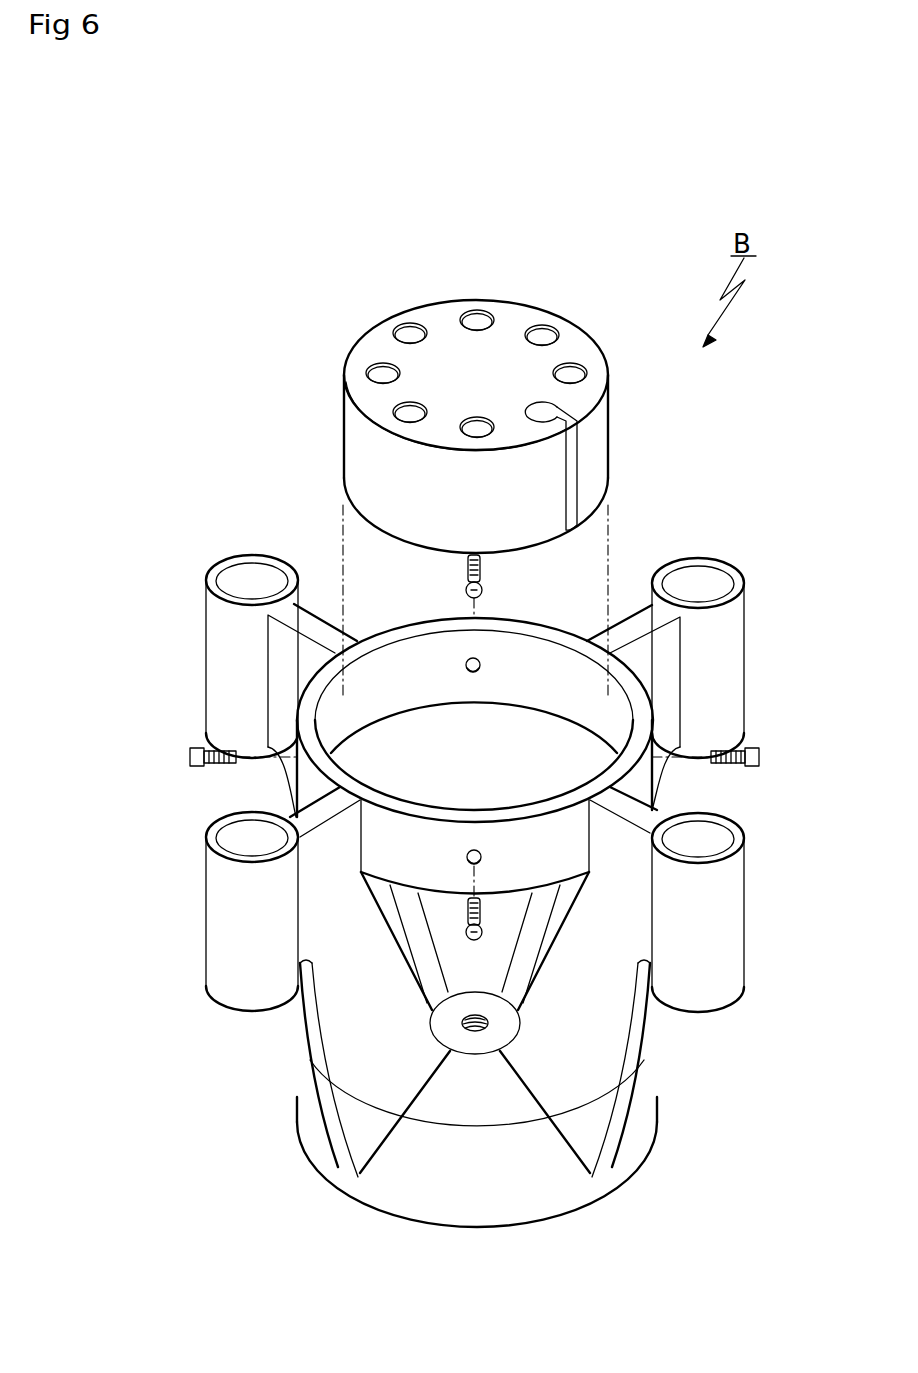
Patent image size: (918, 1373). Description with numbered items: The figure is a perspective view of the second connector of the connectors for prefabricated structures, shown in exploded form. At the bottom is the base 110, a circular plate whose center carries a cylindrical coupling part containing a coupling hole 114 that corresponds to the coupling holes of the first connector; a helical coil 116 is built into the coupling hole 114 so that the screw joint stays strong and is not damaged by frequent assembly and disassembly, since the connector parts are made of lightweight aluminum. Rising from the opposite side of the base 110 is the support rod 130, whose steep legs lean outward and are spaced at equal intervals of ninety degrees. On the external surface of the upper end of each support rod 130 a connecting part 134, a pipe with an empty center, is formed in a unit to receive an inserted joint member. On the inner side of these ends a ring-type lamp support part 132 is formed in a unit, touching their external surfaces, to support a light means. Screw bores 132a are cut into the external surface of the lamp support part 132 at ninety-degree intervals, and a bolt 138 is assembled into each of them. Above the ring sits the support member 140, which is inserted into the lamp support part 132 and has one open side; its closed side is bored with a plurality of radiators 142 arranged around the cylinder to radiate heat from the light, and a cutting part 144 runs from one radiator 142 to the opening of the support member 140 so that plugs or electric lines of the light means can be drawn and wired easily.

The base 110 is at (507, 1177).
The coupling hole 114 is at (471, 1030).
The helical coil 116 is at (466, 1016).
The support rod 130 is at (516, 866).
The lamp support part 132 is at (385, 637).
The screw bore 132a is at (482, 852).
The connecting part 134 is at (745, 922).
The bolt 138 is at (482, 570).
The support member 140 is at (383, 337).
The radiator 142 is at (410, 334).
The cutting part 144 is at (570, 473).